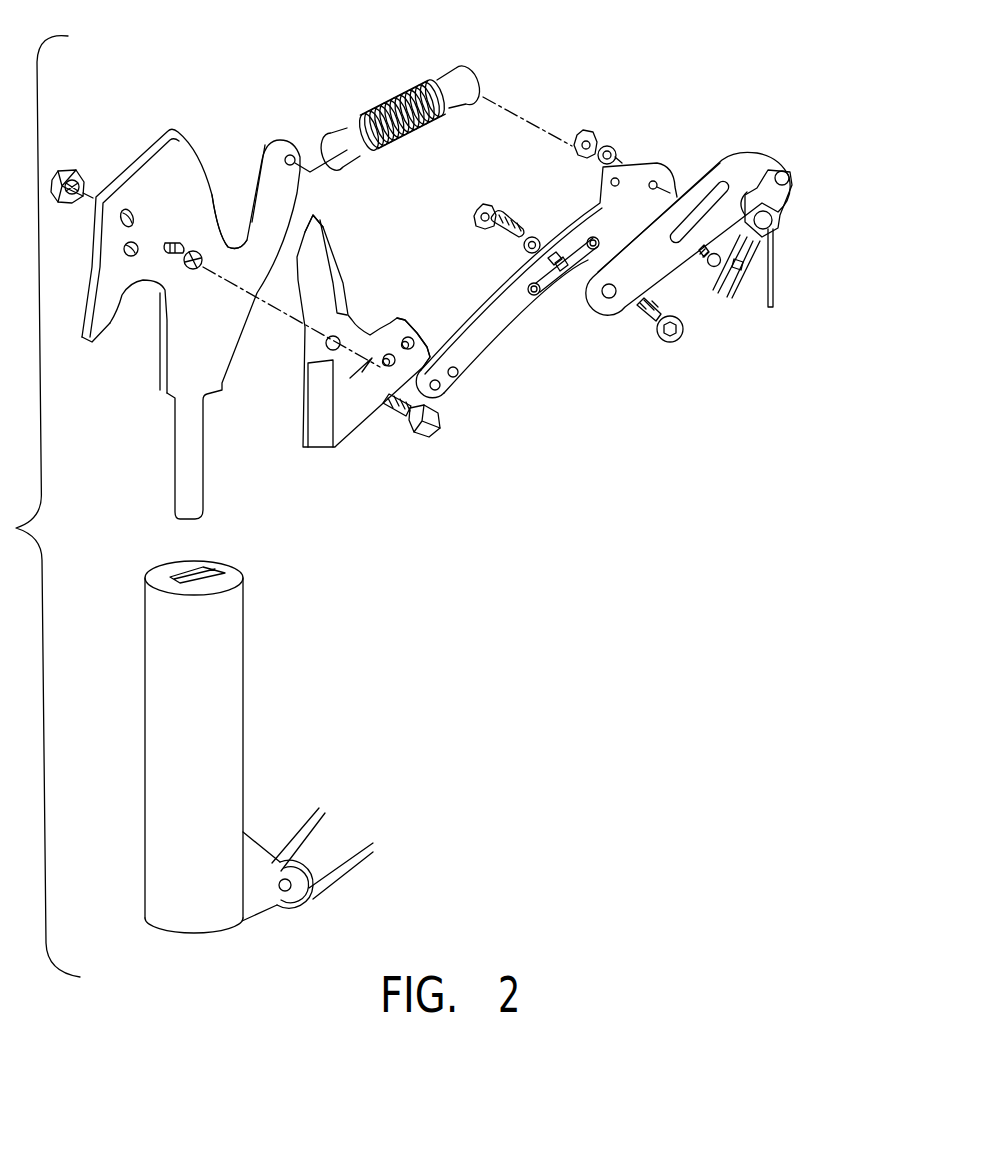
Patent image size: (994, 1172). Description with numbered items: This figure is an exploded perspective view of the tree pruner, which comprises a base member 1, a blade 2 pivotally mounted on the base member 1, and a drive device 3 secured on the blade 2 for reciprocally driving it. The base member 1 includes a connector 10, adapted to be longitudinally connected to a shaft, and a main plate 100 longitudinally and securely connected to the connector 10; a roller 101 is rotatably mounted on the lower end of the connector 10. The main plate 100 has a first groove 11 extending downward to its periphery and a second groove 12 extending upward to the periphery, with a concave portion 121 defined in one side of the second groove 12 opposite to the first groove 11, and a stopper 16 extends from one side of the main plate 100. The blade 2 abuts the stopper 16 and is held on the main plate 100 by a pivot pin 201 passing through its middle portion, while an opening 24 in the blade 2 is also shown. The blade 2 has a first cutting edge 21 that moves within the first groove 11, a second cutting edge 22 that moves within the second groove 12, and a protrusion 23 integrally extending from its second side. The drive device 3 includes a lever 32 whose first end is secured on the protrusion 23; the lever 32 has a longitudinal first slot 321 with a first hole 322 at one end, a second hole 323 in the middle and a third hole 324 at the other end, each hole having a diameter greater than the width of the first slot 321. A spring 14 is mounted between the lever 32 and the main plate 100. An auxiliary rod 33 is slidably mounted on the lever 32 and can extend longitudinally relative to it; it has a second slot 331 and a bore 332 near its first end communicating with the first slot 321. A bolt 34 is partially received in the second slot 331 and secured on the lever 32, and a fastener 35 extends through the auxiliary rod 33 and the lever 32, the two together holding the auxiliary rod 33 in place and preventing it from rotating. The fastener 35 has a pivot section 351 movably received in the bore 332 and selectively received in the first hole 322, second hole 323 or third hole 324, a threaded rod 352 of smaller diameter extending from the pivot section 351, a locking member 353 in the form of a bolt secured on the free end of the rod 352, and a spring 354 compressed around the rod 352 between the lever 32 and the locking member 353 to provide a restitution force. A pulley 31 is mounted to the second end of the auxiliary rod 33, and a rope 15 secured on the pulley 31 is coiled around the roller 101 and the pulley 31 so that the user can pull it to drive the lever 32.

The base member 1 is at (198, 294).
The main plate 100 is at (167, 180).
The connector 10 is at (227, 747).
The roller 101 is at (318, 860).
The first groove 11 is at (144, 310).
The second groove 12 is at (233, 225).
The concave portion 121 is at (245, 200).
The spring 14 is at (397, 107).
The rope 15 is at (774, 280).
The stopper 16 is at (165, 243).
The blade 2 is at (382, 364).
The pivot pin 201 is at (420, 395).
The first cutting edge 21 is at (317, 417).
The second cutting edge 22 is at (333, 263).
The protrusion 23 is at (373, 357).
The pivot hole 24 is at (300, 278).
The drive device 3 is at (608, 242).
The pulley 31 is at (772, 216).
The lever 32 is at (483, 328).
The first slot 321 is at (562, 285).
The first hole 322 is at (537, 297).
The second hole 323 is at (560, 256).
The third hole 324 is at (562, 262).
The auxiliary rod 33 is at (681, 271).
The second slot 331 is at (716, 212).
The bore 332 is at (600, 303).
The bolt 34 is at (710, 264).
The fastener 35 is at (643, 368).
The pivot section 351 is at (658, 322).
The rod 352 is at (666, 353).
The locking member 353 is at (479, 212).
The spring 354 is at (515, 230).